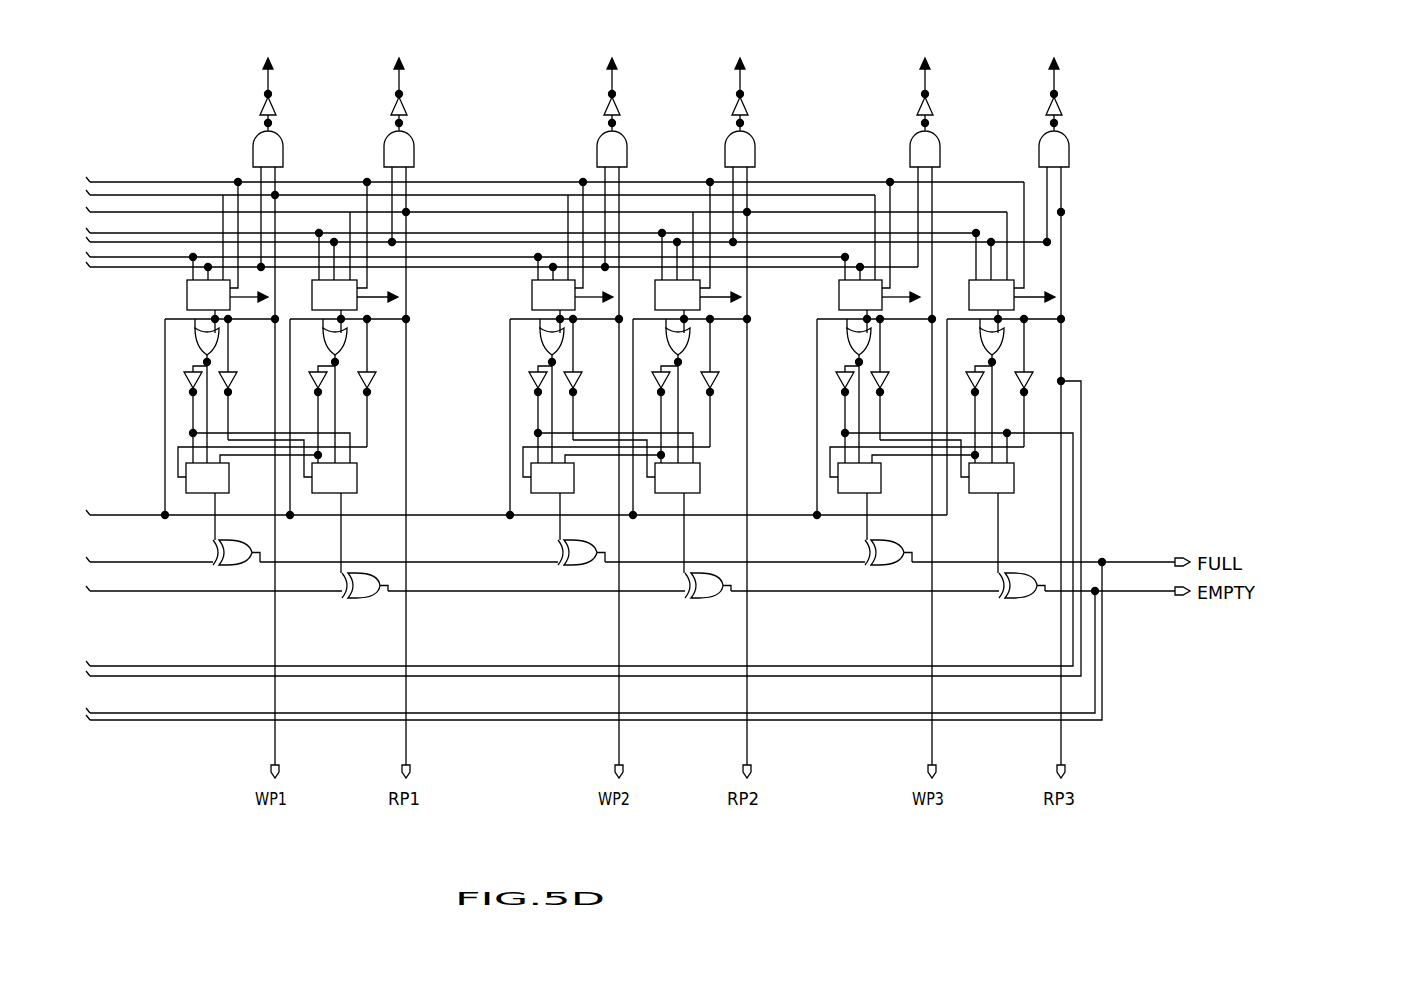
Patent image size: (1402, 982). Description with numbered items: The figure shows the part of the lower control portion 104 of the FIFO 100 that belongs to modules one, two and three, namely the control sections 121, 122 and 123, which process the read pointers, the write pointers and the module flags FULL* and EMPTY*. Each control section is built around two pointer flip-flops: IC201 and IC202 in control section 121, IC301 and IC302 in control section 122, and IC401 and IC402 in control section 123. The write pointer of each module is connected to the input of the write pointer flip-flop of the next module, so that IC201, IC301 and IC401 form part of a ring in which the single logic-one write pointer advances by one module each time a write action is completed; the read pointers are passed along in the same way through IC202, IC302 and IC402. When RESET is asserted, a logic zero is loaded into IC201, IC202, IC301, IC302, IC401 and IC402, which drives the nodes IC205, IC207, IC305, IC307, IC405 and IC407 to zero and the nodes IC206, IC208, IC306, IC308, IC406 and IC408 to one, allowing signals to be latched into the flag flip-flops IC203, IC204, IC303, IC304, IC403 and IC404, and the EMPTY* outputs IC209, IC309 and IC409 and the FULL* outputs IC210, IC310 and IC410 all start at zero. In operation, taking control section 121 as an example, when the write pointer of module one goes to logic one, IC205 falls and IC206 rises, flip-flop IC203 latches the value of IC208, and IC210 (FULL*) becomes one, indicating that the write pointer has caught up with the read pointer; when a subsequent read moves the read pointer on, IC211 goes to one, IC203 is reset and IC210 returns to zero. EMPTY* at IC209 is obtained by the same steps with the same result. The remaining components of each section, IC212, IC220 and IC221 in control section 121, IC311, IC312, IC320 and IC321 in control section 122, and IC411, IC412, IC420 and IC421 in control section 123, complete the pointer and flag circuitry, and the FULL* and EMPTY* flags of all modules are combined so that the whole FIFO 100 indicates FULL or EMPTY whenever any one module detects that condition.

The FIFO 100 is at (1362, 396).
The lower control portion 104 is at (1133, 388).
The control section 121 is at (233, 735).
The control section 122 is at (550, 735).
The control section 123 is at (900, 728).
The flip-flop IC201 is at (227, 295).
The flip-flop IC202 is at (355, 295).
The flip-flop IC203 is at (207, 478).
The flip-flop IC204 is at (334, 478).
The logic element IC205 is at (207, 407).
The logic element IC206 is at (193, 415).
The logic element IC207 is at (367, 402).
The logic element IC208 is at (320, 420).
The EMPTY* output IC209 is at (340, 560).
The FULL* output IC210 is at (212, 543).
The logic element IC211 is at (367, 417).
The inverter IC212 is at (229, 426).
The NAND gate write strobe IC220 is at (250, 112).
The NAND gate read strobe IC221 is at (381, 112).
The flip-flop IC301 is at (572, 295).
The flip-flop IC302 is at (698, 295).
The flip-flop IC303 is at (552, 478).
The flip-flop IC304 is at (677, 478).
The logic element IC305 is at (507, 386).
The logic element IC306 is at (500, 425).
The logic element IC307 is at (720, 417).
The logic element IC308 is at (724, 383).
The EMPTY* output IC309 is at (684, 560).
The FULL* output IC310 is at (560, 543).
The OR gate IC311 is at (702, 402).
The inverter IC312 is at (589, 379).
The NAND gate write strobe IC320 is at (594, 112).
The NAND gate read strobe IC321 is at (720, 112).
The flip-flop IC401 is at (879, 295).
The flip-flop IC402 is at (1012, 295).
The flip-flop IC403 is at (859, 478).
The flip-flop IC404 is at (991, 478).
The logic element IC405 is at (810, 379).
The logic element IC406 is at (804, 425).
The logic element IC407 is at (1053, 417).
The logic element IC408 is at (1058, 386).
The EMPTY* output IC409 is at (997, 560).
The FULL* output IC410 is at (867, 543).
The control component IC411 is at (1056, 405).
The inverter IC412 is at (899, 379).
The NAND gate write strobe IC420 is at (906, 112).
The NAND gate read strobe IC421 is at (1033, 112).